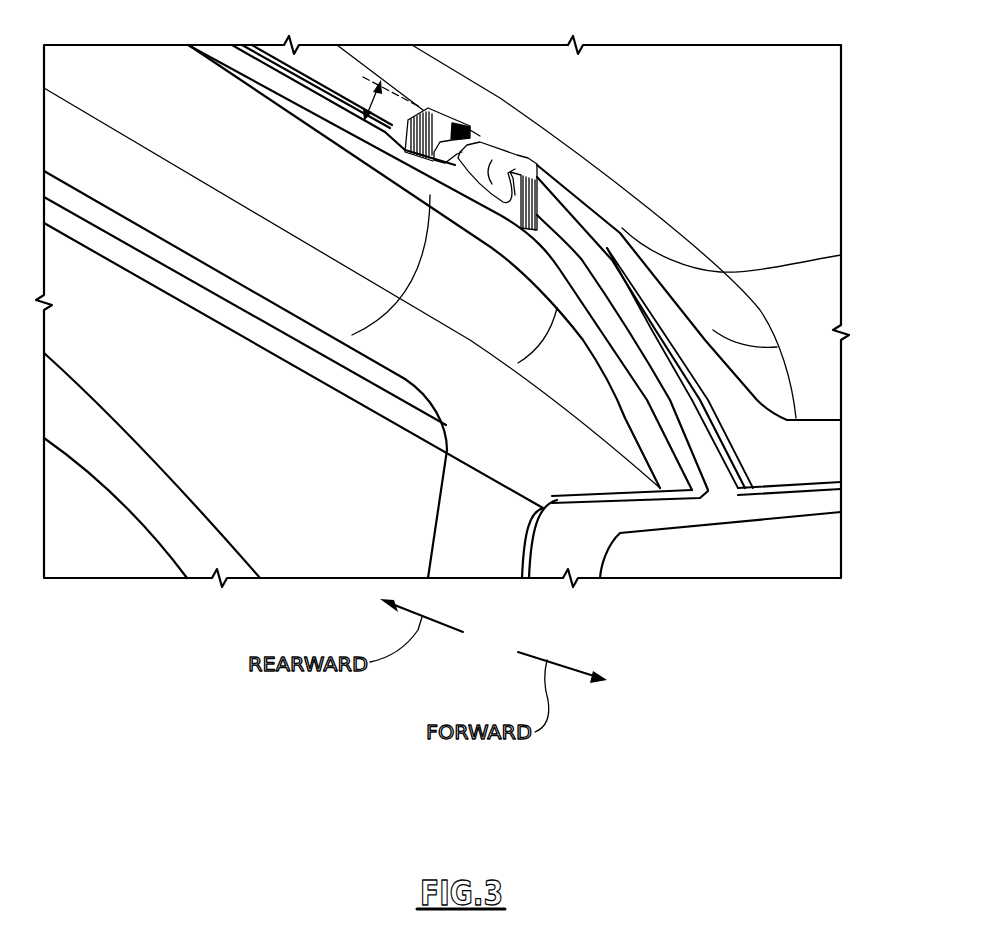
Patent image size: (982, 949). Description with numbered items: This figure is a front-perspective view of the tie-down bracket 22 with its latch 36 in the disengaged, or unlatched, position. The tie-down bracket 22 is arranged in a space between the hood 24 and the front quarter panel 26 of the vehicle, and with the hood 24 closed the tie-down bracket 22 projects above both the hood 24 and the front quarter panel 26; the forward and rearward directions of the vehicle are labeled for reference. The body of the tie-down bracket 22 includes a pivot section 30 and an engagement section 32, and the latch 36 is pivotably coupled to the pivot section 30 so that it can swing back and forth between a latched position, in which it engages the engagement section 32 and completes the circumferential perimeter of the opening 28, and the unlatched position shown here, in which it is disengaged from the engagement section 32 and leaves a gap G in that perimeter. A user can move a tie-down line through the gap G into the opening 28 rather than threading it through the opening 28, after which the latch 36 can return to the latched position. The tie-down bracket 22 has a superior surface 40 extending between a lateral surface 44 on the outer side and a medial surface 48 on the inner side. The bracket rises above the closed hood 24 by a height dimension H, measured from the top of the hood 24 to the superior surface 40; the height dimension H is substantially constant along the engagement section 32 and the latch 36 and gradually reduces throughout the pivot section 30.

The tie-down bracket 22 is at (612, 190).
The hood 24 is at (810, 302).
The front quarter panel 26 is at (447, 360).
The opening 28 is at (445, 177).
The pivot section 30 is at (540, 183).
The engagement section 32 is at (443, 128).
The latch 36 is at (490, 165).
The superior surface 40 is at (453, 127).
The lateral surface 44 is at (545, 230).
The medial surface 48 is at (608, 247).
The gap G is at (487, 131).
The height dimension H is at (383, 102).